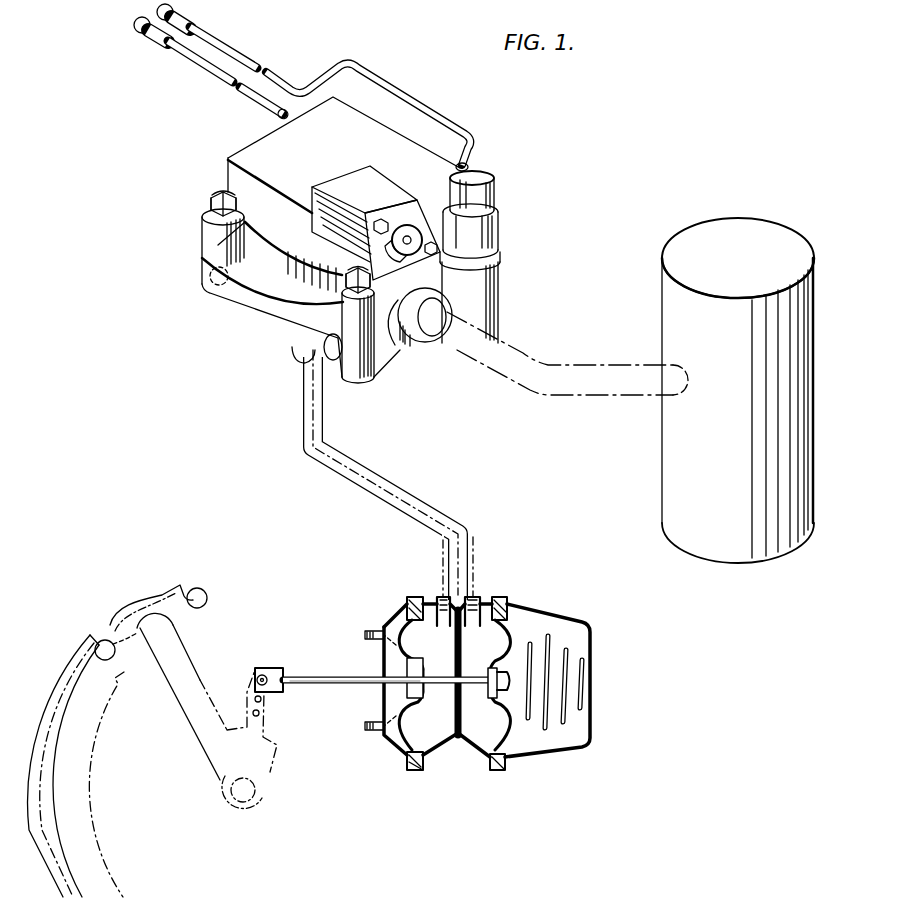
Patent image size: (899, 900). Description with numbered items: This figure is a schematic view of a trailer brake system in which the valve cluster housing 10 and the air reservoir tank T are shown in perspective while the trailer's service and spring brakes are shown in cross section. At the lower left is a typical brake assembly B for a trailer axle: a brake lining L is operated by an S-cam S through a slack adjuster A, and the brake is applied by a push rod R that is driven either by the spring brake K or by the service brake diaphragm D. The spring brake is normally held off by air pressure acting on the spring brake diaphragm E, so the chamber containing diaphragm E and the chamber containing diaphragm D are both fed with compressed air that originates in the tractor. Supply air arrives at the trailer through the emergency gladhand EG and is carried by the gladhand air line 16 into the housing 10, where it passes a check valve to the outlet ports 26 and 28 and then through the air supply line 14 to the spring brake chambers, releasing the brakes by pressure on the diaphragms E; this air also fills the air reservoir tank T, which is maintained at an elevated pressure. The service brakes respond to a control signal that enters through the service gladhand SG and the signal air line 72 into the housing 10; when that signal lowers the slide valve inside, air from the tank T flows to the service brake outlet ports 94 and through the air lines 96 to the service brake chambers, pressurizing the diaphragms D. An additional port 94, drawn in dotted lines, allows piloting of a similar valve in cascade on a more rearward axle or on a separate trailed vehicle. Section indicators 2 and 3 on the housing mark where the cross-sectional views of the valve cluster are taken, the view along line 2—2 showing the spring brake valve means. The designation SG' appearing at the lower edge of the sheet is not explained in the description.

The valve housing 10 is at (248, 135).
The air supply line 14 is at (443, 510).
The gladhand air line 16 is at (380, 73).
The outlet port 26 is at (500, 286).
The outlet port 28 is at (334, 375).
The signal air line 72 is at (193, 67).
The service brake outlet port 94 is at (210, 284).
The air line 96 is at (372, 493).
The section line 2 is at (478, 166).
The section line 3 is at (262, 98).
The emergency gladhand EG is at (200, 20).
The service gladhand SG is at (173, 49).
The supply gauge line prime SG' is at (645, 894).
The air reservoir tank T is at (662, 450).
The brake assembly B is at (266, 619).
The service brake diaphragm D is at (400, 738).
The spring brake diaphragm E is at (515, 757).
The spring brake K is at (533, 736).
The push rod R is at (330, 673).
The slack adjuster A is at (270, 760).
The S-cam S is at (128, 610).
The brake lining L is at (78, 652).